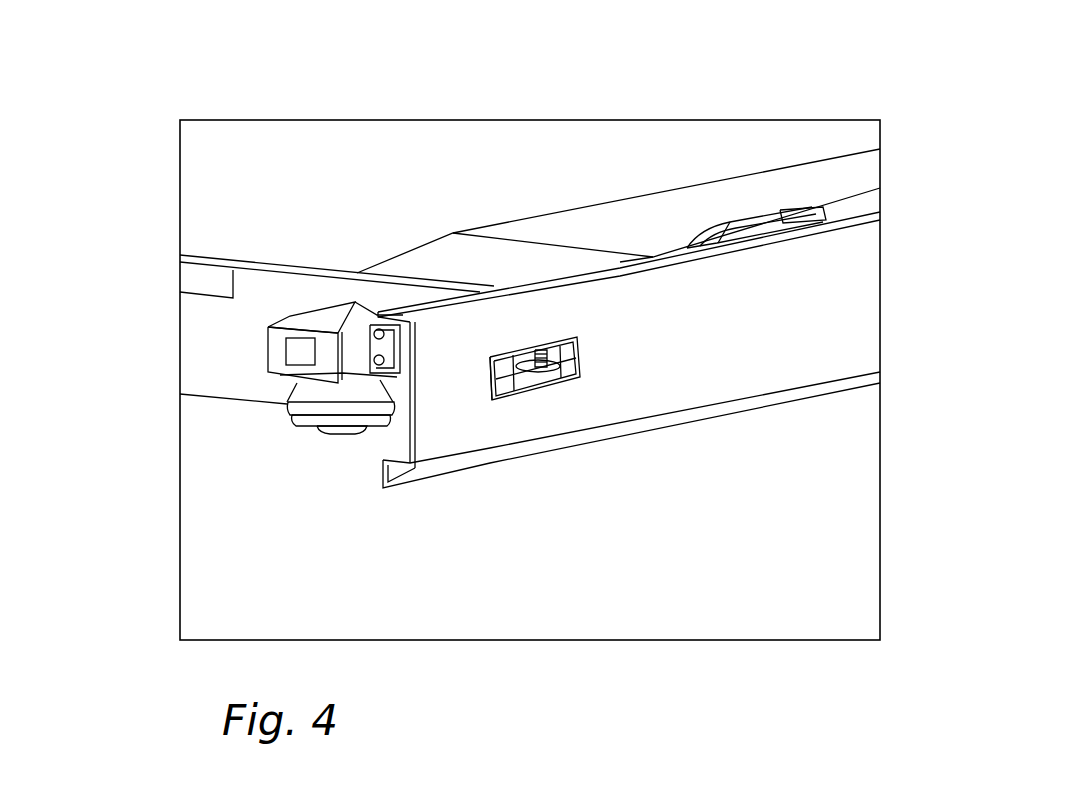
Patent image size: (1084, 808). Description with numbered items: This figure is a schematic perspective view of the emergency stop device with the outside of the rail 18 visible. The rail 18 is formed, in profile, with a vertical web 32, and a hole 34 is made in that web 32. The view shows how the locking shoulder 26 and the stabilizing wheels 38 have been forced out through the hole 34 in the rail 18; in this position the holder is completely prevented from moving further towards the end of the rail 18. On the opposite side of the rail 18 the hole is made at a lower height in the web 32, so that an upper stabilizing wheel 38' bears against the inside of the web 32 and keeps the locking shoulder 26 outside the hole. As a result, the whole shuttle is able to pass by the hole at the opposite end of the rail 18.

The rail 18 is at (423, 310).
The locking shoulder 26 is at (541, 557).
The web 32 is at (450, 378).
The hole 34 is at (671, 192).
The stabilizing wheels 38 is at (600, 532).
The upper stabilizing wheel 38' is at (470, 216).